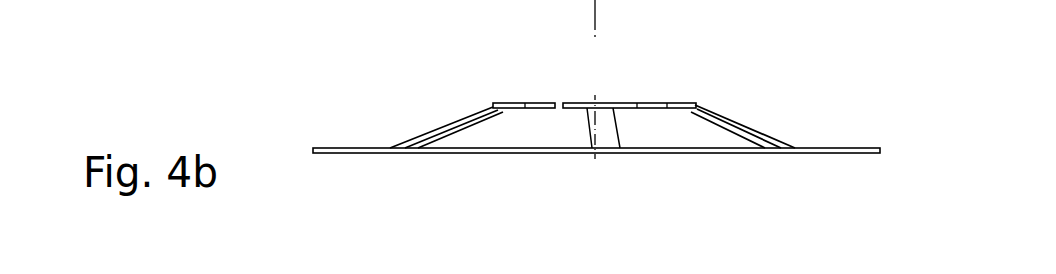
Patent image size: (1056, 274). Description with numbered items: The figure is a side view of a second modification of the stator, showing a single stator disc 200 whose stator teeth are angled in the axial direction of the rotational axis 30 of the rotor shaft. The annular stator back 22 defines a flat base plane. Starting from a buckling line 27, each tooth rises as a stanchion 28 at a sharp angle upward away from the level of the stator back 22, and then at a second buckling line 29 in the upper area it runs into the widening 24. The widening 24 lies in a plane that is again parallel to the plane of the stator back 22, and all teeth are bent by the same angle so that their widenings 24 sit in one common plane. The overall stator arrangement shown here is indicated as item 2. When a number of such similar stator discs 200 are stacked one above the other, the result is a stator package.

The clamping device 2 is at (347, 147).
The annular stator back 22 is at (873, 147).
The widening 24 is at (667, 106).
The buckling line 27 is at (795, 145).
The stanchion 28 is at (737, 127).
The second buckling line 29 is at (493, 101).
The rotational axis 30 is at (599, 116).
The stator disc 200 is at (520, 153).